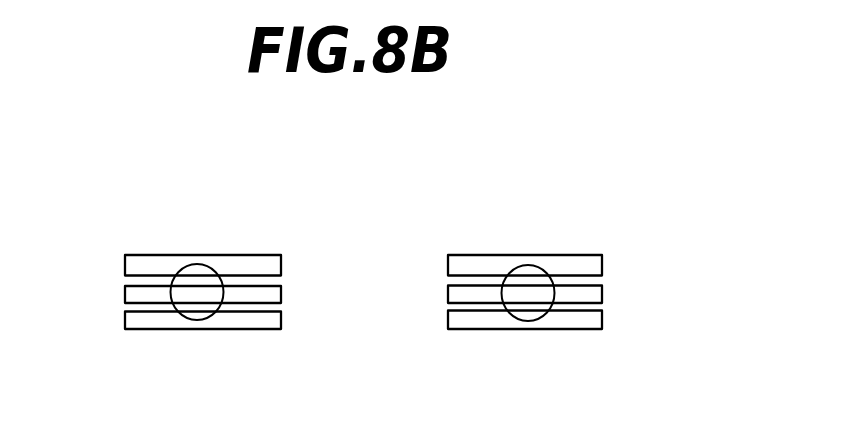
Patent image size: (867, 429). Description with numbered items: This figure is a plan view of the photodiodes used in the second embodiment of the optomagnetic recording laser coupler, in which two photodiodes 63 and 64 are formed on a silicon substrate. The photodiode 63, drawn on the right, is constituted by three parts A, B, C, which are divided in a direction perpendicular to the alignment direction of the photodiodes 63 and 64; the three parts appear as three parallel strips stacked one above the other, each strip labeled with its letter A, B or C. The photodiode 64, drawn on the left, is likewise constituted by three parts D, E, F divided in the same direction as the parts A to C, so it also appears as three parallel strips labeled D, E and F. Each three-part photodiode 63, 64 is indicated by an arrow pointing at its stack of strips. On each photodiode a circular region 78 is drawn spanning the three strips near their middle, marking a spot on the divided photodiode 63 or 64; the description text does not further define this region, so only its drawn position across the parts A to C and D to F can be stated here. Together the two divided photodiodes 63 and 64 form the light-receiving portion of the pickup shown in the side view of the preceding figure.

The photodiode 64 is at (169, 241).
The photodiode 63 is at (558, 242).
The contact region 78 is at (194, 264).
The part A of photodiode A is at (597, 267).
The part B of photodiode B is at (593, 292).
The part C of photodiode C is at (596, 319).
The part D of photodiode D is at (137, 267).
The part E of photodiode E is at (137, 293).
The part F of photodiode F is at (137, 317).